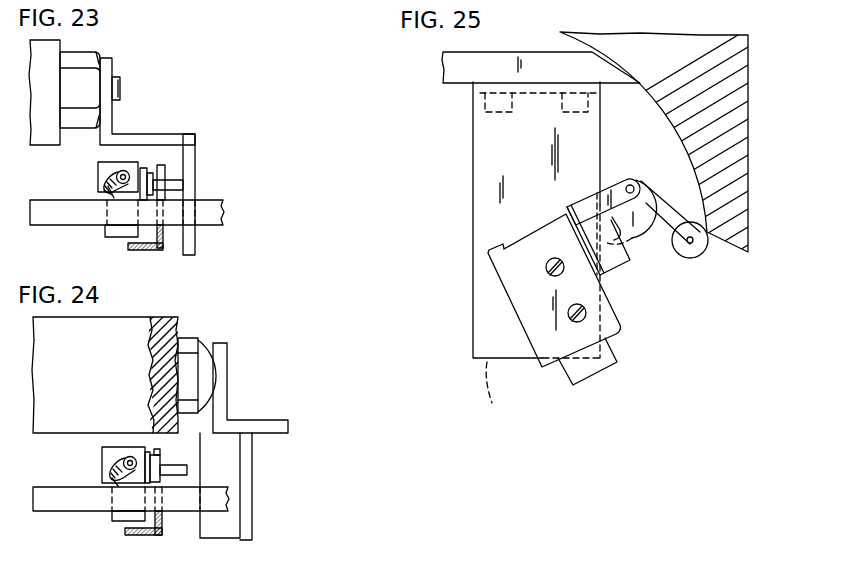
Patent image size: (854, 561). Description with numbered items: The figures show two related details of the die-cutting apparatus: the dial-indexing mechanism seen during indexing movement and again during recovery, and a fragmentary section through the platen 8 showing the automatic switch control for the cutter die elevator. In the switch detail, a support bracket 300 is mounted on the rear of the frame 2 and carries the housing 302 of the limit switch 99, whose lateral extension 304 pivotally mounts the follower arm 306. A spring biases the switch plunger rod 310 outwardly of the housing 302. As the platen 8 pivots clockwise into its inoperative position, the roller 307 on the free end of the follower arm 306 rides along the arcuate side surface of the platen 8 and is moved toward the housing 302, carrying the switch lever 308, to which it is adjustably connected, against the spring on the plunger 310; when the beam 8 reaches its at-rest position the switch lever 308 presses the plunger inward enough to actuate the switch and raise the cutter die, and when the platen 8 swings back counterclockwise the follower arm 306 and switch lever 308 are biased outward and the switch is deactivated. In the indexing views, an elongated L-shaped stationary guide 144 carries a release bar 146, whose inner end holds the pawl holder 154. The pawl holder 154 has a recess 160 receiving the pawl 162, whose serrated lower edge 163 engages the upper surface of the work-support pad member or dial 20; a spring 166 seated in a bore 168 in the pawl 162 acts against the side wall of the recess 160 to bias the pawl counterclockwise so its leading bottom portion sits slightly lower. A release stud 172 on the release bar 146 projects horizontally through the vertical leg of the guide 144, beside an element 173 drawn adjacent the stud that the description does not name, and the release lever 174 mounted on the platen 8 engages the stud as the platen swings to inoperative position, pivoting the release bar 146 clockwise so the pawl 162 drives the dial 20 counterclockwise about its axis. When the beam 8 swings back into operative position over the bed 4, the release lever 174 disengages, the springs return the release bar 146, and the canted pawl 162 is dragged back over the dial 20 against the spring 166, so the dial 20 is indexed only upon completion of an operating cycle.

In FIG. 25, the frame 2 is at (493, 52).
In FIG. 23, the bed 4 is at (49, 196).
In FIG. 23, the platen 8 is at (44, 147).
In FIG. 24, the platen 8 is at (98, 375).
In FIG. 25, the platen 8 is at (612, 34).
In FIG. 23, the work-support pad member 20 is at (52, 226).
In FIG. 24, the work-support pad member 20 is at (70, 512).
In FIG. 25, the automatic switch 99 is at (522, 329).
In FIG. 23, the stationary guide 144 is at (150, 250).
In FIG. 24, the stationary guide 144 is at (158, 536).
In FIG. 23, the release bar 146 is at (143, 168).
In FIG. 24, the release bar 146 is at (148, 450).
In FIG. 23, the pawl holder 154 is at (106, 162).
In FIG. 24, the pawl holder 154 is at (112, 447).
In FIG. 23, the recess 160 is at (104, 194).
In FIG. 23, the pawl 162 is at (110, 196).
In FIG. 24, the pawl 162 is at (113, 477).
In FIG. 23, the serrated lower edge 163 is at (110, 226).
In FIG. 24, the serrated lower edge 163 is at (118, 505).
In FIG. 23, the spring 166 is at (109, 181).
In FIG. 24, the spring 166 is at (115, 464).
In FIG. 23, the bore 168 is at (116, 175).
In FIG. 23, the release stud 172 is at (170, 180).
In FIG. 24, the release stud 172 is at (184, 467).
In FIG. 23, the washer 173 is at (150, 170).
In FIG. 24, the washer 173 is at (157, 452).
In FIG. 23, the release lever 174 is at (170, 134).
In FIG. 24, the release lever 174 is at (254, 459).
In FIG. 25, the support bracket 300 is at (473, 189).
In FIG. 25, the housing 302 is at (605, 272).
In FIG. 25, the lateral extension 304 is at (592, 200).
In FIG. 25, the follower arm 306 is at (657, 204).
In FIG. 25, the roller 307 is at (697, 257).
In FIG. 25, the switch lever 308 is at (643, 188).
In FIG. 25, the switch plunger rod 310 is at (636, 248).